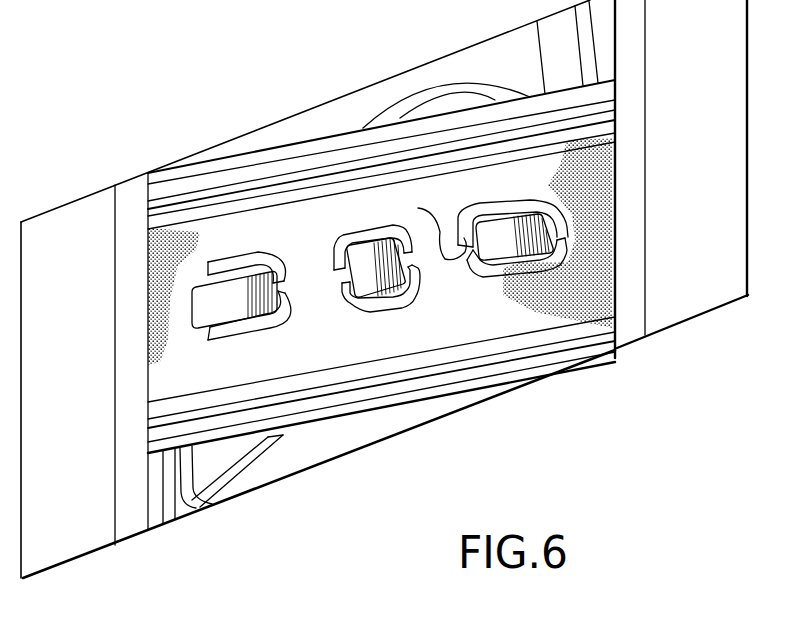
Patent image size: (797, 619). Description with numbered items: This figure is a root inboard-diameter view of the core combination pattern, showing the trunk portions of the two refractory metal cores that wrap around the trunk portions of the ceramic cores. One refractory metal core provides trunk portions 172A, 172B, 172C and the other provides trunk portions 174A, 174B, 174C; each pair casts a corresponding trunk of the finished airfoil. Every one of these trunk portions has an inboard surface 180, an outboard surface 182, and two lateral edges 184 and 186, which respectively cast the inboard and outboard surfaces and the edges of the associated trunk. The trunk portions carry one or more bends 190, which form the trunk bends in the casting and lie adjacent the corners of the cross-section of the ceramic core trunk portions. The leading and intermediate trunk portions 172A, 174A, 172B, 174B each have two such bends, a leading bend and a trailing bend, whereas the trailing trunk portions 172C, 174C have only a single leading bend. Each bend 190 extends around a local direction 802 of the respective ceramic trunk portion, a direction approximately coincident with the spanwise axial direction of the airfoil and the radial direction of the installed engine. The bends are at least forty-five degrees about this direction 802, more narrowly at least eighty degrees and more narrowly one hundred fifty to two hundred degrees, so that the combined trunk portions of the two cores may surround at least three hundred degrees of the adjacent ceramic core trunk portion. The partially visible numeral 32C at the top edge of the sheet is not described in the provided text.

The trunk portion 174A is at (510, 200).
The trunk portion 174B is at (361, 232).
The trunk portion 174C is at (227, 262).
The trunk portion 172A is at (498, 276).
The trunk portion 172B is at (390, 307).
The trunk portion 172C is at (238, 340).
The inboard surface 180 is at (547, 278).
The outboard surface 182 is at (532, 200).
The lateral edge 184 is at (482, 230).
The lateral edge 186 is at (423, 222).
The bend 190 is at (465, 207).
The local direction 802 is at (522, 228).
The side wall 32C is at (151, 6).